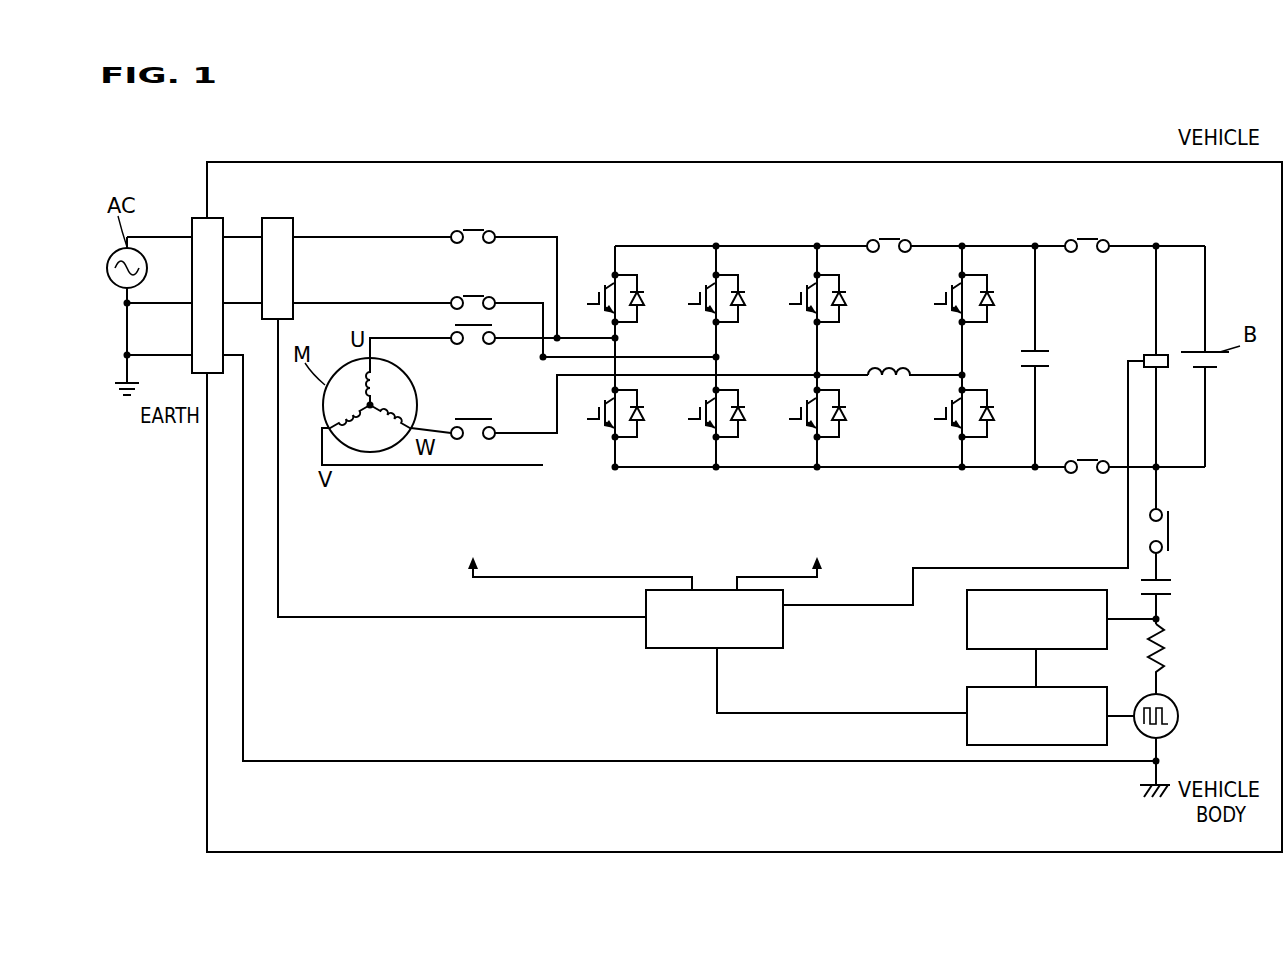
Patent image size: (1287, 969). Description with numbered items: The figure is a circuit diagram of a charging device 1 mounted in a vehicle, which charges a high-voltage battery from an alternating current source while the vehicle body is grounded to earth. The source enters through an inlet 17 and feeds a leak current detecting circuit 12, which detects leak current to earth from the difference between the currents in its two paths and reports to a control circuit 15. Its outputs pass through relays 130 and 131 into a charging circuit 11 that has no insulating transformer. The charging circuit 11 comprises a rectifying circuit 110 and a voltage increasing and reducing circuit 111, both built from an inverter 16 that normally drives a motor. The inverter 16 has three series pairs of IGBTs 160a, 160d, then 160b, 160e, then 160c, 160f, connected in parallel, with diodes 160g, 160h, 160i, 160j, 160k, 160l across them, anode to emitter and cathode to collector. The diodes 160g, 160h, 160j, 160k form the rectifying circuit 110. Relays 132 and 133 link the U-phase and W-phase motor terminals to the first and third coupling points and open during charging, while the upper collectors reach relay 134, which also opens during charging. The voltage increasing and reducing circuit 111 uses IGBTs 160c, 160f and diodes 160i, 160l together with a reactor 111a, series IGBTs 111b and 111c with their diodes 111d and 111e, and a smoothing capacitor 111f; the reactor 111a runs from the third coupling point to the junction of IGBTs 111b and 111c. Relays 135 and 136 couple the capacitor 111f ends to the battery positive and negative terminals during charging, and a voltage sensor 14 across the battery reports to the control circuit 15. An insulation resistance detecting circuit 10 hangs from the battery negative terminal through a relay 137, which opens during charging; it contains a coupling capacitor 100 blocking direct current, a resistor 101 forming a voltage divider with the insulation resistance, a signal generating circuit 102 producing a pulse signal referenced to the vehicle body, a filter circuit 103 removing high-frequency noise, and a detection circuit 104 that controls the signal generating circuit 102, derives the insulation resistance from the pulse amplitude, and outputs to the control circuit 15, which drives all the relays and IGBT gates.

The charging device 1 is at (791, 122).
The insulation resistance detecting circuit 10 is at (1213, 614).
The charging circuit 11 is at (807, 220).
The leak current detecting circuit 12 is at (278, 218).
The voltage sensor 14 is at (1144, 358).
The control circuit 15 is at (667, 650).
The inverter 16 is at (602, 462).
The inlet 17 is at (200, 218).
The coupling capacitor 100 is at (1195, 577).
The resistor 101 is at (1167, 653).
The signal generating circuit 102 is at (1179, 714).
The filter circuit 103 is at (967, 622).
The detection circuit 104 is at (967, 700).
The rectifying circuit 110 is at (667, 237).
The voltage increasing and reducing circuit 111 is at (964, 235).
The reactor 111a is at (890, 368).
The IGBT 111b is at (934, 304).
The IGBT 111c is at (934, 419).
The diode 111d is at (991, 305).
The diode 111e is at (991, 420).
The capacitor 111f is at (1050, 358).
The relay 130 is at (473, 230).
The relay 131 is at (473, 296).
The relay 132 is at (473, 345).
The relay 133 is at (473, 419).
The relay 134 is at (893, 233).
The relay 135 is at (1093, 240).
The relay 136 is at (1088, 460).
The relay 137 is at (1170, 525).
The IGBT 160a is at (587, 303).
The IGBT 160b is at (689, 304).
The IGBT 160c is at (790, 304).
The IGBT 160d is at (588, 419).
The IGBT 160e is at (688, 419).
The IGBT 160f is at (789, 419).
The diode 160g is at (640, 313).
The diode 160h is at (741, 313).
The diode 160i is at (842, 313).
The diode 160j is at (640, 428).
The diode 160k is at (741, 428).
The diode 160l is at (842, 428).